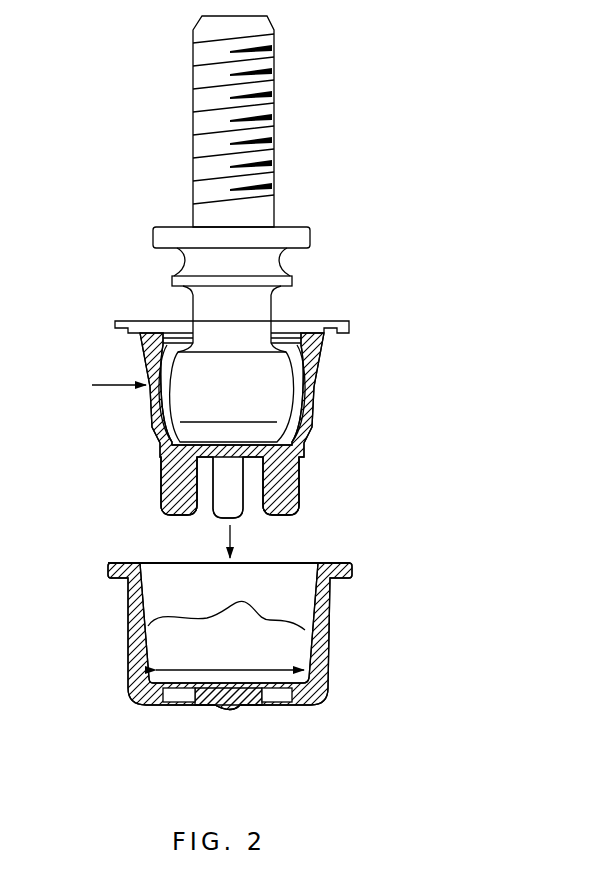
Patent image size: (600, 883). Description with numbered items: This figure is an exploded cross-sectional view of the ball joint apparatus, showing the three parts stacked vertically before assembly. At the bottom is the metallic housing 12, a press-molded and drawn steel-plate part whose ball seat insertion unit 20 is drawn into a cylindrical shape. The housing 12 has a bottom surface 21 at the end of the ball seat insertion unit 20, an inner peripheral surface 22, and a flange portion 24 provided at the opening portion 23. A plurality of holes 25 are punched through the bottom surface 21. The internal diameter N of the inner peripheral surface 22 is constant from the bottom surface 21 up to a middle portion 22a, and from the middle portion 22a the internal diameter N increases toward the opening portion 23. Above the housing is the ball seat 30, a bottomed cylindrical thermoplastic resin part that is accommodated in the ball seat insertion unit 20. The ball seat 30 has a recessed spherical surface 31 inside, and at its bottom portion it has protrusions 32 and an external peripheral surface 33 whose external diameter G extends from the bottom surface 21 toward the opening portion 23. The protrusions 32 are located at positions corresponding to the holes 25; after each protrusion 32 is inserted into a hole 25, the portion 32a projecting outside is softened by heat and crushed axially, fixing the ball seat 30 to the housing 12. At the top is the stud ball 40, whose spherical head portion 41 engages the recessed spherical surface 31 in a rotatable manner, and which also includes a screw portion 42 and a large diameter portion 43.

The stud ball 40 is at (241, 229).
The screw portion 42 is at (274, 120).
The large diameter portion 43 is at (312, 232).
The spherical head portion 41 is at (267, 404).
The ball seat 30 is at (245, 418).
The recessed spherical surface 31 is at (158, 416).
The protrusions 32 is at (286, 478).
The portion of the protrusion 32a is at (292, 522).
The external peripheral surface 33 is at (140, 350).
The external diameter G is at (321, 385).
The ball seat insertion unit 20 is at (239, 646).
The bottom surface 21 is at (218, 708).
The inner peripheral surface 22 is at (308, 652).
The middle portion 22a is at (226, 603).
The opening portion 23 is at (285, 562).
The flange portion 24 is at (352, 566).
The holes 25 is at (272, 708).
The housing 12 is at (125, 690).
The internal diameter N is at (230, 658).